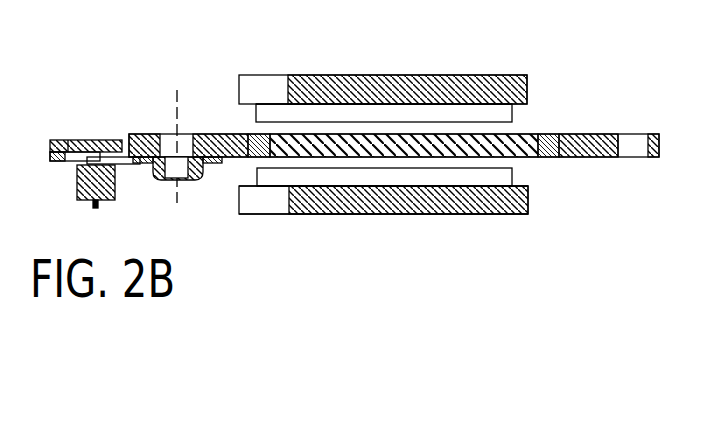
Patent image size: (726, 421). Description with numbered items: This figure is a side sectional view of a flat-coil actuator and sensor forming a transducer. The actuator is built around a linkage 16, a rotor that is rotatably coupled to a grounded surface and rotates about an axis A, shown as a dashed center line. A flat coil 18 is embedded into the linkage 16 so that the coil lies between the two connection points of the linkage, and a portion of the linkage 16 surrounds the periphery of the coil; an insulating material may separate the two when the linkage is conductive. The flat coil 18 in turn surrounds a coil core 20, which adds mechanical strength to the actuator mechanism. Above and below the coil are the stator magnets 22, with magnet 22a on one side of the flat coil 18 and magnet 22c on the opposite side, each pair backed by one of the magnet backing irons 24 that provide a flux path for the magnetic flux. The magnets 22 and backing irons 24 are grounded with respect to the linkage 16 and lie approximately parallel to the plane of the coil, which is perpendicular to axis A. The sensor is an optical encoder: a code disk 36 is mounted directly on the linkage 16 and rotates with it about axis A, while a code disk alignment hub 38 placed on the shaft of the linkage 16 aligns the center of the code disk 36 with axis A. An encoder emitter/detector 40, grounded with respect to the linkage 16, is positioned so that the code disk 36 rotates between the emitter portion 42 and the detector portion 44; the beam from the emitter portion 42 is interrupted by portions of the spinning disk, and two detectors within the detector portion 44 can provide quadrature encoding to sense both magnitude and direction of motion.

The linkage 16 is at (213, 134).
The flat coil 18 is at (250, 133).
The coil core 20 is at (373, 158).
The stator magnets 22 is at (512, 117).
The magnet 22a is at (385, 112).
The magnet 22c is at (420, 180).
The magnet backing irons 24 is at (325, 74).
The code disk 36 is at (225, 164).
The code disk alignment hub 38 is at (155, 180).
The encoder emitter/detector 40 is at (78, 161).
The emitter portion 42 is at (95, 140).
The detector portion 44 is at (77, 177).
The axis A is at (175, 133).